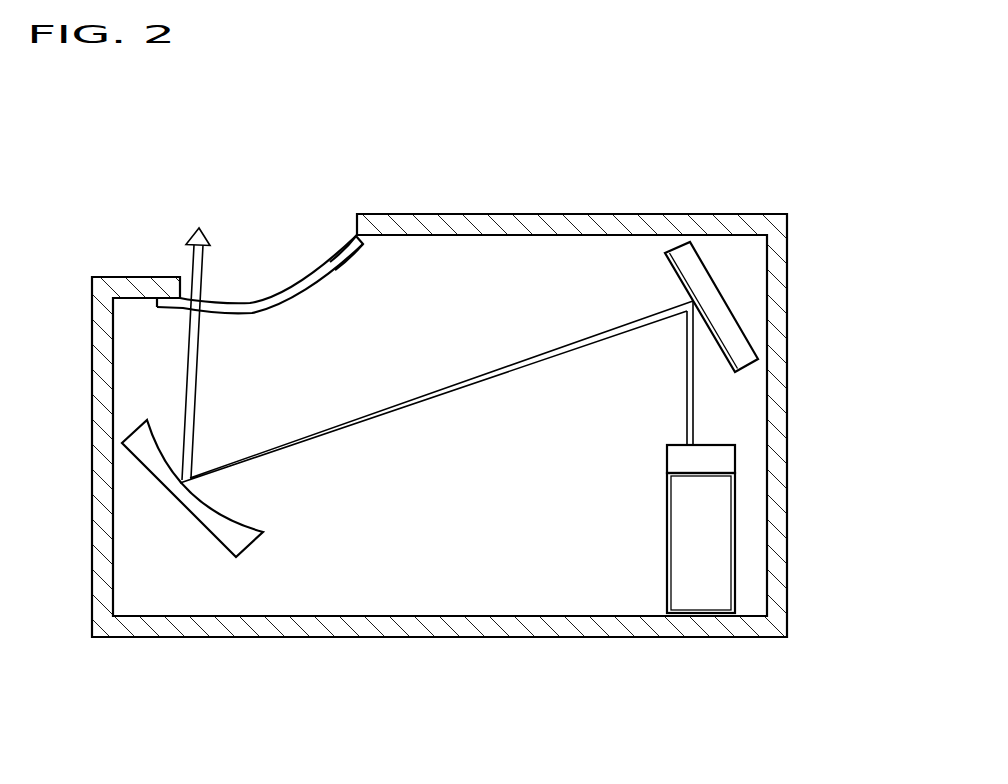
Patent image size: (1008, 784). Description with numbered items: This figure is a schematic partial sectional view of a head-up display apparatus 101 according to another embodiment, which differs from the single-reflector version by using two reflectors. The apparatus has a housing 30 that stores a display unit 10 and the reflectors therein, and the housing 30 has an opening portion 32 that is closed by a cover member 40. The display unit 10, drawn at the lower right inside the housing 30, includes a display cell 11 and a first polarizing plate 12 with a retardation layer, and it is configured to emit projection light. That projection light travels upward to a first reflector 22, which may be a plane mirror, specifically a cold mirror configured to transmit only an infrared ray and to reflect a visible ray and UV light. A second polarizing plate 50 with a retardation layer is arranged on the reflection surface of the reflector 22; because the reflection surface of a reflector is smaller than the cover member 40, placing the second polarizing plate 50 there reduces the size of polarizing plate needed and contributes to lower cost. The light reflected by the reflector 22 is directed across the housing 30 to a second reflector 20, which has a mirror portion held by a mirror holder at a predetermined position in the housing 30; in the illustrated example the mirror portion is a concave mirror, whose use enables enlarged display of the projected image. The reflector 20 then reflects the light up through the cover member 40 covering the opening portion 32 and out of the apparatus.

The head-up display apparatus 101 is at (712, 152).
The housing 30 is at (470, 223).
The opening portion 32 is at (327, 243).
The cover member 40 is at (267, 300).
The reflector 20 is at (152, 462).
The reflector 22 is at (727, 322).
The second polarizing plate with a retardation layer 50 is at (677, 280).
The display unit 10 is at (847, 442).
The display cell 11 is at (723, 548).
The first polarizing plate with a retardation layer 12 is at (723, 453).